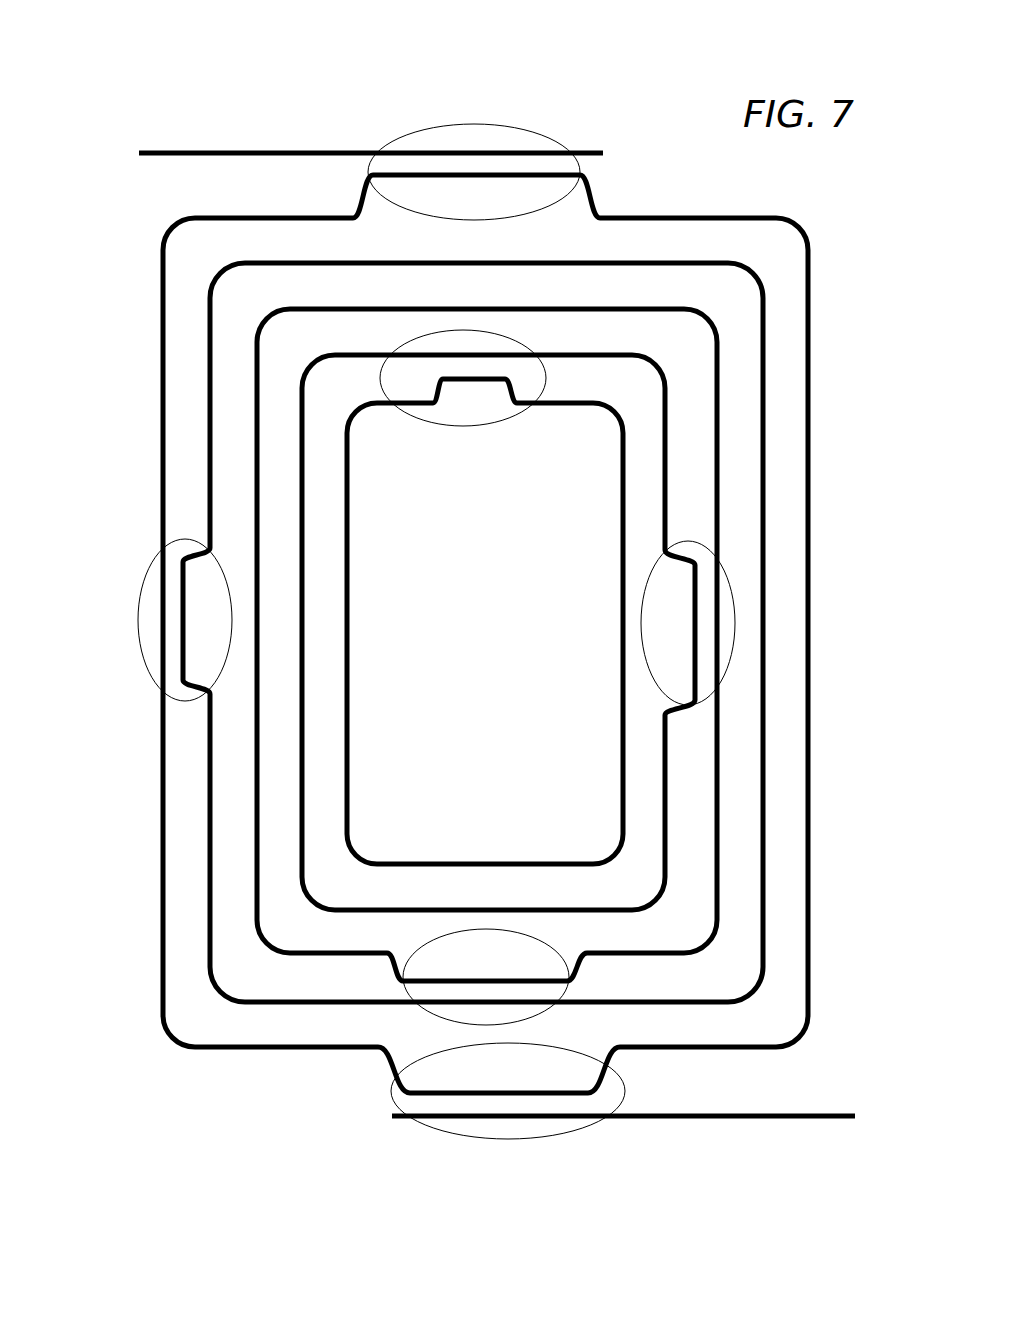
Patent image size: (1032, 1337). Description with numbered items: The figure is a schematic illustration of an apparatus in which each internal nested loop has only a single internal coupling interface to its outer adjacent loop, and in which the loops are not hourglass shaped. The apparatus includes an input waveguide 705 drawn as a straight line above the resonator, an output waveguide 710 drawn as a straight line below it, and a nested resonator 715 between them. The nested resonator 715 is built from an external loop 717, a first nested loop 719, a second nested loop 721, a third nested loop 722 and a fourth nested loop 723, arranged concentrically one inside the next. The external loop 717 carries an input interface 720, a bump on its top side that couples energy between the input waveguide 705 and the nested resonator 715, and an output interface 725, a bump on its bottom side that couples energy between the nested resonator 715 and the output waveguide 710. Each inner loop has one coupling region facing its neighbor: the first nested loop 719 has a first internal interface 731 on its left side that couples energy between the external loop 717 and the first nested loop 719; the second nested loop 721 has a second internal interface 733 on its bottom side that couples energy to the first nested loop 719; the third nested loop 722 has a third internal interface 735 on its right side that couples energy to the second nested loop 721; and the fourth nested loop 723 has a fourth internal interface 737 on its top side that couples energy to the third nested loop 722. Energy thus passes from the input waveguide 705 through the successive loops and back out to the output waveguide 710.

The input waveguide 705 is at (340, 126).
The output waveguide 710 is at (648, 1139).
The nested resonator 715 is at (143, 188).
The external loop 717 is at (212, 1048).
The first nested loop 719 is at (297, 1003).
The input interface 720 is at (505, 206).
The second nested loop 721 is at (713, 928).
The third nested loop 722 is at (672, 797).
The fourth nested loop 723 is at (630, 722).
The output interface 725 is at (530, 1080).
The first internal interface 731 is at (228, 620).
The second internal interface 733 is at (505, 976).
The third internal interface 735 is at (690, 631).
The fourth internal interface 737 is at (485, 411).